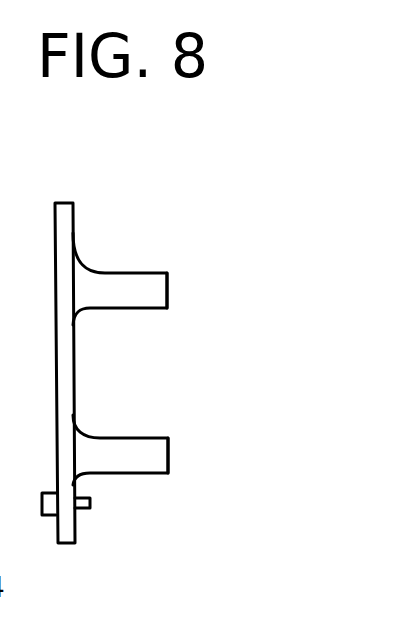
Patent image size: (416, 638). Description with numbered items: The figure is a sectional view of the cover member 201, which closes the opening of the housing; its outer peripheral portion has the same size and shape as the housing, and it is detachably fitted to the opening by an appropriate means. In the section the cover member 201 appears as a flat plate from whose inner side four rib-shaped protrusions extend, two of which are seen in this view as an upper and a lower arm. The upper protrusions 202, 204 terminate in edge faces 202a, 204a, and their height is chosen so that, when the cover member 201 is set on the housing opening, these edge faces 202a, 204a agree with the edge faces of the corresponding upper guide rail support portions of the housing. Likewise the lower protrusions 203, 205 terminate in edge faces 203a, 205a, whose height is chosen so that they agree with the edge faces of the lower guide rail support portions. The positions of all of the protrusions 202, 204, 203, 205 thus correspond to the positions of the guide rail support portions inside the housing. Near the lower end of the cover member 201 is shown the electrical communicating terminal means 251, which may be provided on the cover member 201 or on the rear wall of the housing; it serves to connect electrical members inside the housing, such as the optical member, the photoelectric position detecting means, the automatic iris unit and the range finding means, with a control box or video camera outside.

The cover member 201 is at (59, 230).
The upper protrusion 202 is at (226, 274).
The upper protrusion 204 is at (112, 287).
The edge face 202a is at (273, 295).
The edge face 204a is at (167, 290).
The lower protrusion 203 is at (225, 434).
The lower protrusion 205 is at (115, 452).
The edge face 203a is at (273, 459).
The edge face 205a is at (170, 455).
The electrical communicating terminal means 251 is at (45, 510).